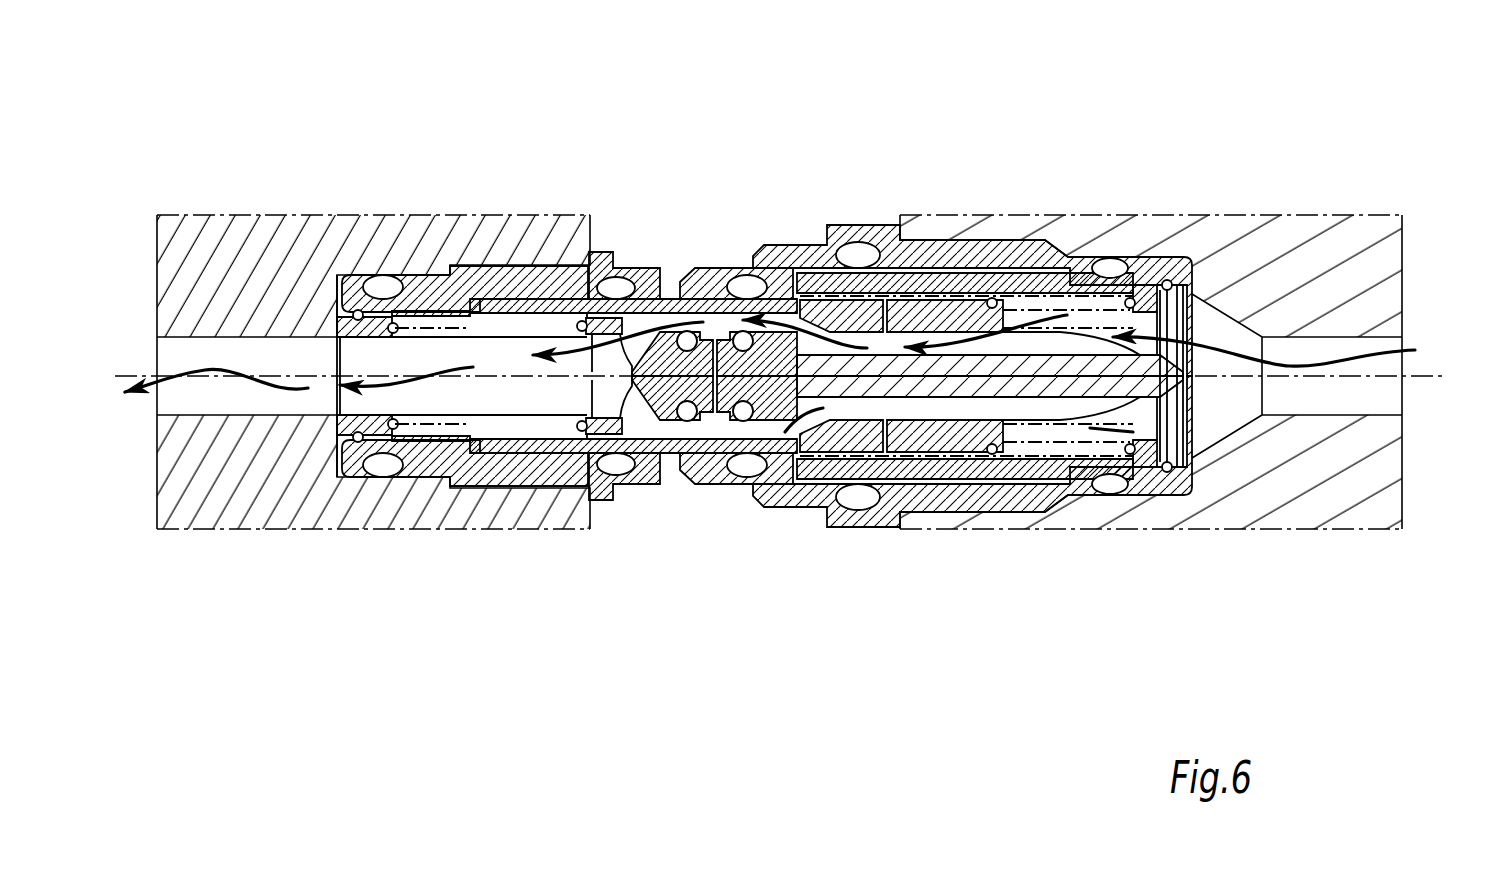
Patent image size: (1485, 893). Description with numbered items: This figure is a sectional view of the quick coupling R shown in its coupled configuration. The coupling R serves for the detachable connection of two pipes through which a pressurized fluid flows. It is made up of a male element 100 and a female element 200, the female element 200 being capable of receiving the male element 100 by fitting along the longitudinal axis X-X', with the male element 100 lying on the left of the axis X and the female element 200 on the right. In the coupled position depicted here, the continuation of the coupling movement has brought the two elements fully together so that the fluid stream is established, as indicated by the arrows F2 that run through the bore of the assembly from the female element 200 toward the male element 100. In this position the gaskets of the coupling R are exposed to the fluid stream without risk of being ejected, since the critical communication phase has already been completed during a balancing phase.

The male element 100 is at (413, 190).
The female element 200 is at (972, 299).
The quick coupling R is at (764, 273).
The longitudinal axis X-X' X is at (782, 375).
The fluid stream arrows F2 is at (782, 373).